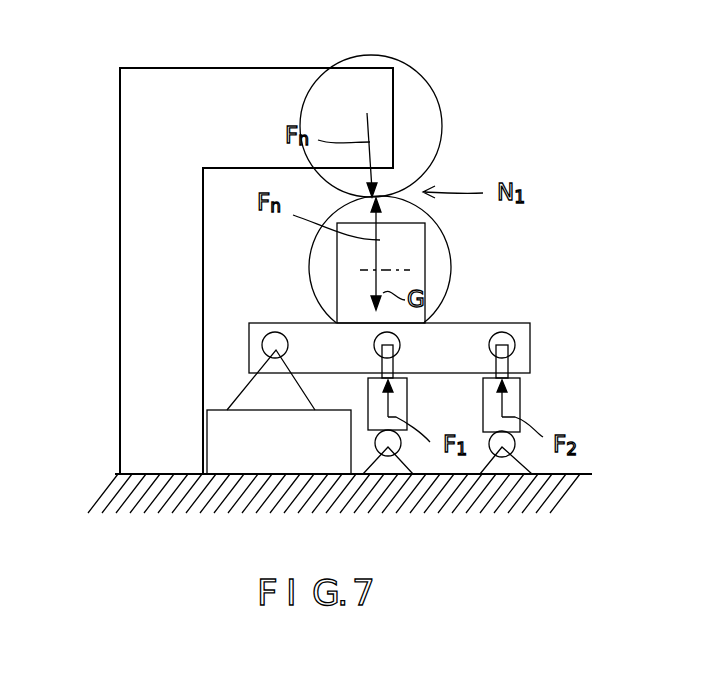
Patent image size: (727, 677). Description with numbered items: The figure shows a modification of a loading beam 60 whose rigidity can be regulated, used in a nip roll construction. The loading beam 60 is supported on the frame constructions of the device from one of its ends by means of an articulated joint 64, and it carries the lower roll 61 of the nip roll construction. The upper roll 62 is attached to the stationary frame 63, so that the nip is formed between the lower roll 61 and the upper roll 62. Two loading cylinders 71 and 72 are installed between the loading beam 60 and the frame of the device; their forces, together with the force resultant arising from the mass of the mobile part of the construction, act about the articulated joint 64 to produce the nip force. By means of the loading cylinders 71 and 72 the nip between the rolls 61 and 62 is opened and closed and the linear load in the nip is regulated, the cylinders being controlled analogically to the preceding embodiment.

The loading beam 60 is at (523, 339).
The lower roll 61 is at (437, 273).
The upper roll 62 is at (420, 157).
The stationary frame 63 is at (130, 128).
The articulated joint 64 is at (278, 320).
The loading cylinder 71 is at (370, 418).
The loading cylinder 72 is at (520, 407).